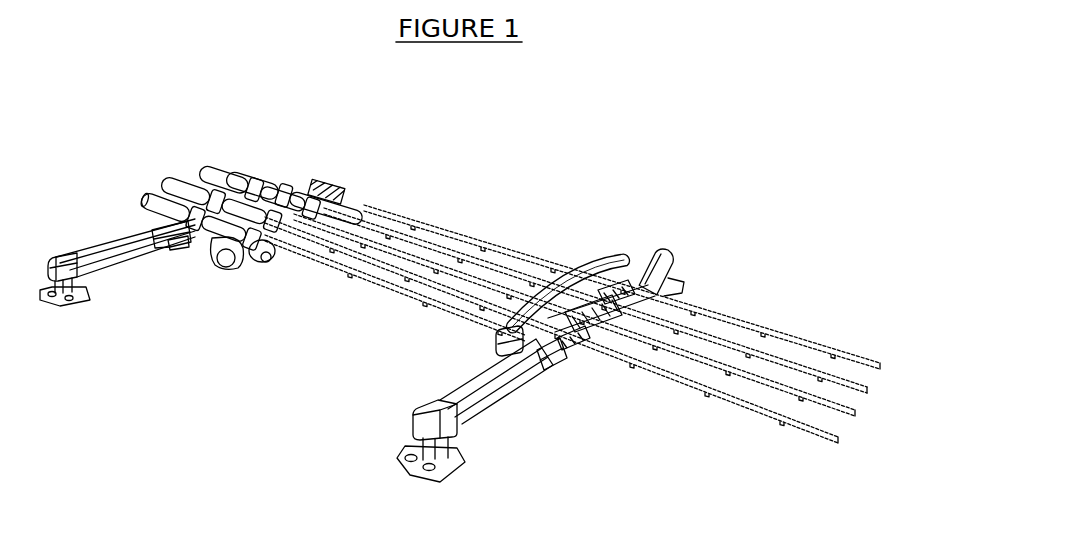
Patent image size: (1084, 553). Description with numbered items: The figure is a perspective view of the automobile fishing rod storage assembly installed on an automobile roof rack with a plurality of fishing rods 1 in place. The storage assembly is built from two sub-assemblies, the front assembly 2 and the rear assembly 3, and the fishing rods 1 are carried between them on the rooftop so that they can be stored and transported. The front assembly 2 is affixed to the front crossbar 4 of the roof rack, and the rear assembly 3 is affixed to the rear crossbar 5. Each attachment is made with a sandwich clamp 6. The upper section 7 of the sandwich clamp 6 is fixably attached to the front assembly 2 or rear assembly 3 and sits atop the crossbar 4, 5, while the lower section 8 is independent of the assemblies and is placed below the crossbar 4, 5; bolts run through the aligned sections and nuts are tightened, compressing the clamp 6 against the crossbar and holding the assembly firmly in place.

The fishing rods 1 is at (377, 273).
The front assembly 2 is at (620, 262).
The rear assembly 3 is at (141, 197).
The front crossbar 4 is at (512, 377).
The rear crossbar 5 is at (120, 250).
The sandwich clamp 6 is at (192, 252).
The upper section of the sandwich clamp 7 is at (505, 333).
The lower section of the sandwich clamp 8 is at (560, 365).